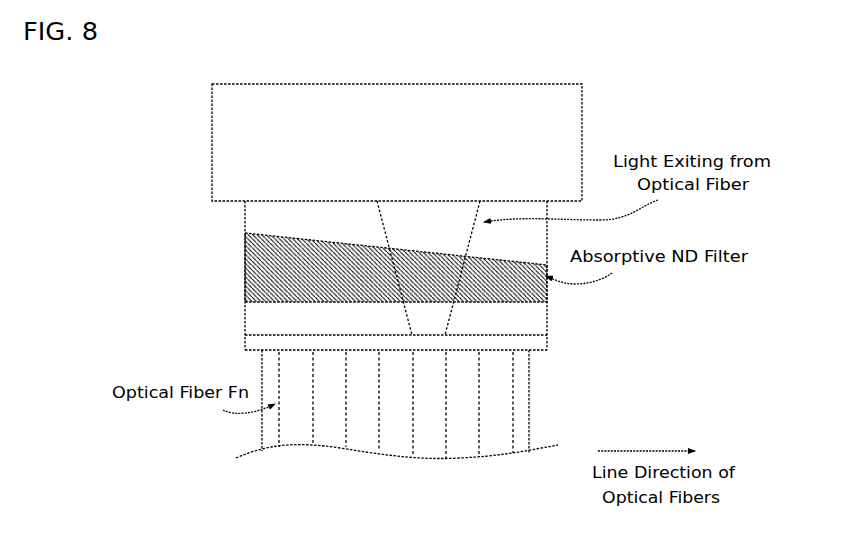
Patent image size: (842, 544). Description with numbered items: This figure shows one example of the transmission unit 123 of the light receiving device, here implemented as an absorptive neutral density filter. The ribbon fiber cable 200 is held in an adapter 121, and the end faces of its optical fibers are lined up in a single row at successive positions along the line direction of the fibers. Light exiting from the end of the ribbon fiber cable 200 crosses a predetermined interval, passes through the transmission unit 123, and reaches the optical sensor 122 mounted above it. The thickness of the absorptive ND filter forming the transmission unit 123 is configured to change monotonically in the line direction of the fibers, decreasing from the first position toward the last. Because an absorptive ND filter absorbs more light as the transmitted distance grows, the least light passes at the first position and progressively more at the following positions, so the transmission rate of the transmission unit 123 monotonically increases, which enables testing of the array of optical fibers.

The optical sensor 122 is at (618, 127).
The transmission unit 123 is at (241, 273).
The adapter 121 is at (240, 343).
The ribbon fiber cable 200 is at (590, 405).